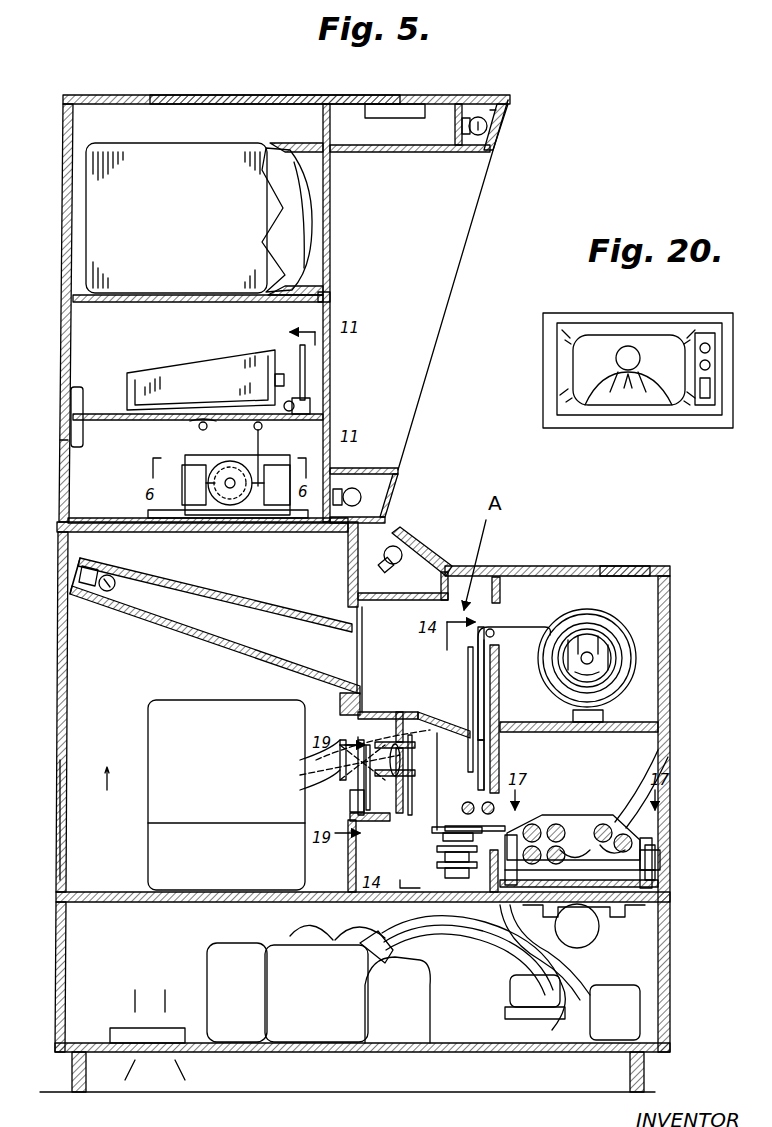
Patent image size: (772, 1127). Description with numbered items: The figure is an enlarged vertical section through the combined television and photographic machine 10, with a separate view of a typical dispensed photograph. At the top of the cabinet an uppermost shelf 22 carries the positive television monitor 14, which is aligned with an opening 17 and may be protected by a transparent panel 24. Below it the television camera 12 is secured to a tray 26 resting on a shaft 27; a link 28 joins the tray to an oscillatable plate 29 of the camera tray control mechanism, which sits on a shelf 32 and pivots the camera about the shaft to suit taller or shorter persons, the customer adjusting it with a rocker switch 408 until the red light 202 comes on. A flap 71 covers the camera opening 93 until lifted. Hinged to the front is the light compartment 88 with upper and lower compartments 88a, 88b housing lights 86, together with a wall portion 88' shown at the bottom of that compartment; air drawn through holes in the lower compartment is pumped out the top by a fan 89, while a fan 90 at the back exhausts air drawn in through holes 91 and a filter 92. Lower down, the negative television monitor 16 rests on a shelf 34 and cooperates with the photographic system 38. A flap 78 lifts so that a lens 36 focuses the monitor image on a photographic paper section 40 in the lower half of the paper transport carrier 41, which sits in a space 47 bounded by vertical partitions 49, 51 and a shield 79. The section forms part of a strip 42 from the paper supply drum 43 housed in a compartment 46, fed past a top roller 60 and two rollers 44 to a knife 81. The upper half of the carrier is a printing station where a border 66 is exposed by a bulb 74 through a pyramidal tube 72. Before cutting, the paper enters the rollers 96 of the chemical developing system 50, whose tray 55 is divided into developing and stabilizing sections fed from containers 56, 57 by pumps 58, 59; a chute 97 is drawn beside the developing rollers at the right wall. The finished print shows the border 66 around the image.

In FIG. 5, the combined television and photographic machine 10 is at (540, 201).
In FIG. 5, the television camera 12 is at (205, 378).
In FIG. 5, the positive television monitor 14 is at (312, 205).
In FIG. 5, the negative television monitor 16 is at (150, 723).
In FIG. 5, the opening 17 is at (330, 300).
In FIG. 5, the uppermost shelf 22 is at (180, 305).
In FIG. 5, the transparent panel 24 is at (328, 243).
In FIG. 5, the tray 26 is at (140, 424).
In FIG. 5, the shaft 27 is at (198, 431).
In FIG. 5, the link 28 is at (318, 443).
In FIG. 5, the oscillatable plate 29 is at (226, 505).
In FIG. 5, the shelf 32 is at (120, 530).
In FIG. 5, the shelf 34 is at (110, 892).
In FIG. 5, the lens 36 is at (418, 775).
In FIG. 5, the photographic system 38 is at (462, 697).
In FIG. 5, the photographic paper section 40 is at (485, 750).
In FIG. 20, the photographic paper section 40 is at (626, 314).
In FIG. 5, the paper transport carrier 41 is at (466, 668).
In FIG. 5, the strip 42 is at (514, 658).
In FIG. 5, the paper supply drum 43 is at (632, 640).
In FIG. 5, the rollers 44 is at (457, 809).
In FIG. 5, the compartment 46 is at (650, 691).
In FIG. 5, the space 47 is at (400, 652).
In FIG. 5, the vertical partition 49 is at (345, 845).
In FIG. 5, the chemical developing system 50 is at (588, 815).
In FIG. 5, the vertical partition 51 is at (500, 673).
In FIG. 5, the tray 55 is at (660, 870).
In FIG. 5, the container 56 is at (225, 962).
In FIG. 5, the container 57 is at (400, 1010).
In FIG. 5, the pump 58 is at (505, 1015).
In FIG. 5, the pump 59 is at (600, 1040).
In FIG. 5, the top roller 60 is at (495, 634).
In FIG. 20, the border 66 is at (696, 318).
In FIG. 5, the flap 71 is at (306, 373).
In FIG. 5, the tube 72 is at (228, 592).
In FIG. 5, the bulb 74 is at (118, 598).
In FIG. 5, the flap 78 is at (360, 770).
In FIG. 5, the shield 79 is at (470, 715).
In FIG. 5, the knife 81 is at (462, 830).
In FIG. 5, the lights 86 is at (492, 118).
In FIG. 5, the light compartment 88 is at (416, 180).
In FIG. 5, the upper compartment 88a is at (490, 140).
In FIG. 5, the lower compartment 88b is at (398, 478).
In FIG. 5, the wall portion 88' is at (390, 521).
In FIG. 5, the fan 89 is at (412, 108).
In FIG. 5, the fan 90 is at (60, 442).
In FIG. 5, the holes 91 is at (258, 95).
In FIG. 5, the filter 92 is at (120, 1030).
In FIG. 5, the opening 93 is at (312, 405).
In FIG. 5, the rollers 96 is at (533, 824).
In FIG. 5, the chute 97 is at (640, 805).
In FIG. 5, the red light 202 is at (380, 496).
In FIG. 5, the rocker switch 408 is at (602, 560).